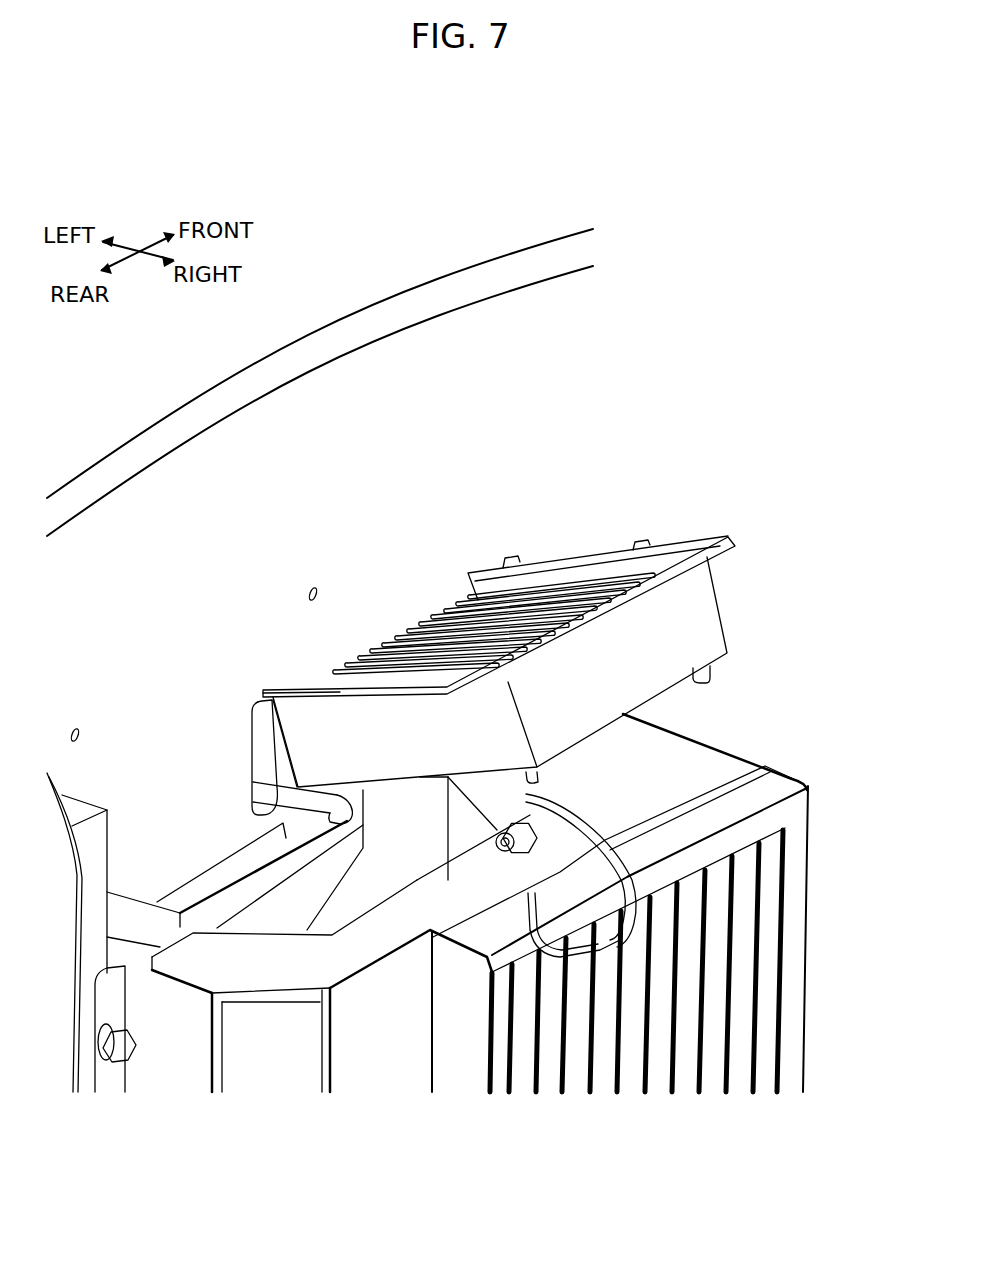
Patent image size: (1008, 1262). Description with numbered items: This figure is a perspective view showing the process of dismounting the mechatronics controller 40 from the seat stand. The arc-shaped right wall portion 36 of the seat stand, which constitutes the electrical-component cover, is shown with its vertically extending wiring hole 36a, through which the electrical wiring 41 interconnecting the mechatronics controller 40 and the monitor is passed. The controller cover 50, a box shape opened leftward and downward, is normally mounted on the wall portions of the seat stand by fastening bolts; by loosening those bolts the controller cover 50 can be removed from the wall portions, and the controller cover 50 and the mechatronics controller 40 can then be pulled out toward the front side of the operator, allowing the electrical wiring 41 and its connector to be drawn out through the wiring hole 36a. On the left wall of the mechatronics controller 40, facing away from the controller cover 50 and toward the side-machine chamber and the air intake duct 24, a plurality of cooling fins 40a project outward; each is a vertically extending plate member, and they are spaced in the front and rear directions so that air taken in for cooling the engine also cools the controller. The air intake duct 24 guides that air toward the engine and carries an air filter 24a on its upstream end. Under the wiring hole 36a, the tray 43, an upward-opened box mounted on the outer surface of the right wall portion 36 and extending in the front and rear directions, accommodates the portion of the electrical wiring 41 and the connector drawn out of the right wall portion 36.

The right wall portion 36 is at (158, 432).
The wiring hole 36a is at (256, 727).
The mechatronics controller 40 is at (421, 610).
The cooling fins 40a is at (590, 560).
The electrical wiring 41 is at (256, 778).
The tray 43 is at (295, 880).
The controller cover 50 is at (728, 622).
The air intake duct 24 is at (700, 740).
The air filter 24a is at (778, 884).